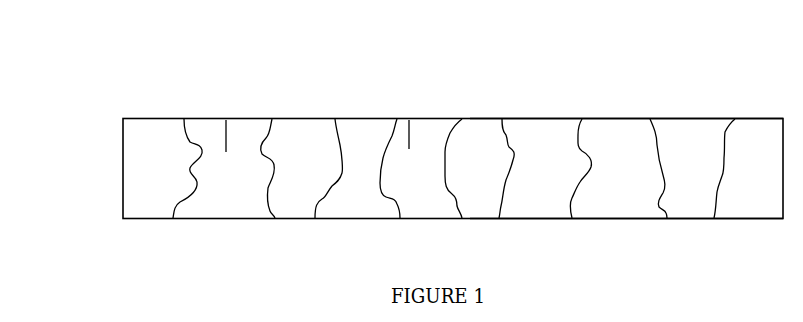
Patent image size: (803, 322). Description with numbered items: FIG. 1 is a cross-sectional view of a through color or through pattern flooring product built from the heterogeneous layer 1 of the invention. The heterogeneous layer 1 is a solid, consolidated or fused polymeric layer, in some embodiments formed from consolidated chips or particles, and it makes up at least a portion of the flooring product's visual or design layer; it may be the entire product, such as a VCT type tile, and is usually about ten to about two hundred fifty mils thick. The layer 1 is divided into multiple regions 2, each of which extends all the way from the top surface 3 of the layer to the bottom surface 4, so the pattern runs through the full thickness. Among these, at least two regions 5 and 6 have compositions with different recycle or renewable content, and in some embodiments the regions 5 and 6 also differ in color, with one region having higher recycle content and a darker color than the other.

The heterogeneous layer 1 is at (533, 117).
The multiple regions 2 is at (173, 152).
The top surface 3 is at (749, 118).
The bottom surface 4 is at (749, 219).
The first region 5 is at (226, 120).
The second region 6 is at (409, 120).